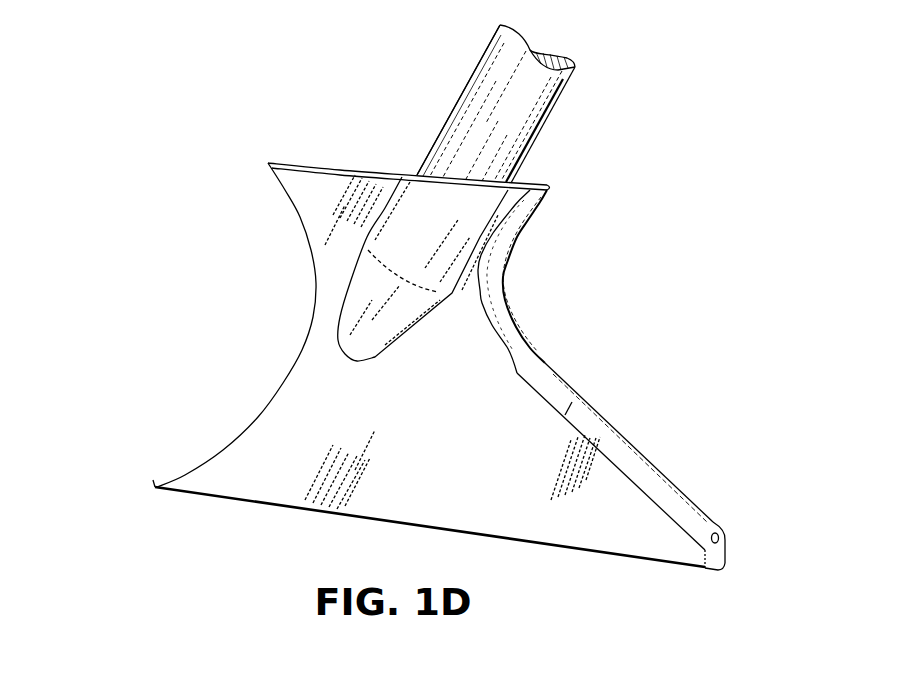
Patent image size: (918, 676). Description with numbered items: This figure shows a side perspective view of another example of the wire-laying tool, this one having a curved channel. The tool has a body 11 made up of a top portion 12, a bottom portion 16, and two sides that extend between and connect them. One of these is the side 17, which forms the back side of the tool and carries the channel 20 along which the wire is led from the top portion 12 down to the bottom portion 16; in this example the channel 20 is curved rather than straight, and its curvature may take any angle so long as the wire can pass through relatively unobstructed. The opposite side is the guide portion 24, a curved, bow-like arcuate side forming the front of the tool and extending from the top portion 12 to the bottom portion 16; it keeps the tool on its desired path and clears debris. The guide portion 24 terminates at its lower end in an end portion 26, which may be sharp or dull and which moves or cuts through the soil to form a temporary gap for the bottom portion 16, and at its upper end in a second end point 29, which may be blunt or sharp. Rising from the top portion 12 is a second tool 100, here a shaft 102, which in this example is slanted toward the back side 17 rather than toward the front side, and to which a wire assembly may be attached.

The body 11 is at (503, 398).
The top portion 12 is at (330, 183).
The bottom portion 16 is at (243, 502).
The side 17 is at (567, 412).
The channel 20 is at (648, 470).
The guide portion 24 is at (303, 348).
The end portion 26 is at (155, 485).
The second end point 29 is at (270, 163).
The second tool 100 is at (452, 105).
The shaft 102 is at (458, 100).